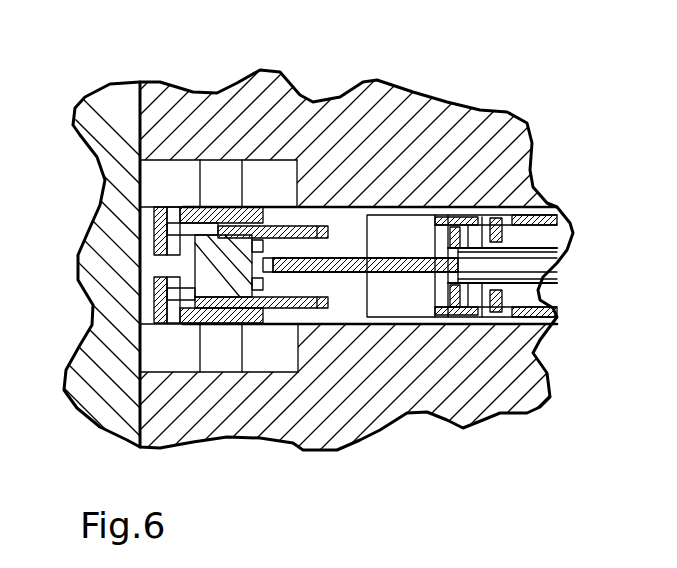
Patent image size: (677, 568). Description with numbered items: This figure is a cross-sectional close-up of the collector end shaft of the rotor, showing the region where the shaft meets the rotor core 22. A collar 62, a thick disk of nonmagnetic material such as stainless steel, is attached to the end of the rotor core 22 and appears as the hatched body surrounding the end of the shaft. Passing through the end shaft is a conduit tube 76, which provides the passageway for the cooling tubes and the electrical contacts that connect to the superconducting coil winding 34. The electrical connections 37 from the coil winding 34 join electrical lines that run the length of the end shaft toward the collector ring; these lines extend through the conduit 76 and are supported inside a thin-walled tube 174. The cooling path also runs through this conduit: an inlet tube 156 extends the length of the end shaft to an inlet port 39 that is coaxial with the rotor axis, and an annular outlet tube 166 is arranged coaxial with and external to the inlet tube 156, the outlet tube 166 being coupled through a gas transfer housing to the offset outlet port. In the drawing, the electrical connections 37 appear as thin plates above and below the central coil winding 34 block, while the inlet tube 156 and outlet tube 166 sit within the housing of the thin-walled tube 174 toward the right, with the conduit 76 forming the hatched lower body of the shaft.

The rotor core 22 is at (118, 112).
The collar 62 is at (258, 103).
The electrical connections 37 is at (318, 227).
The inlet port 39 is at (348, 259).
The thin-walled tube 174 is at (435, 214).
The outlet tube 166 is at (525, 247).
The inlet tube 156 is at (533, 264).
The conduit tube 76 is at (427, 326).
The coil winding 34 is at (223, 257).